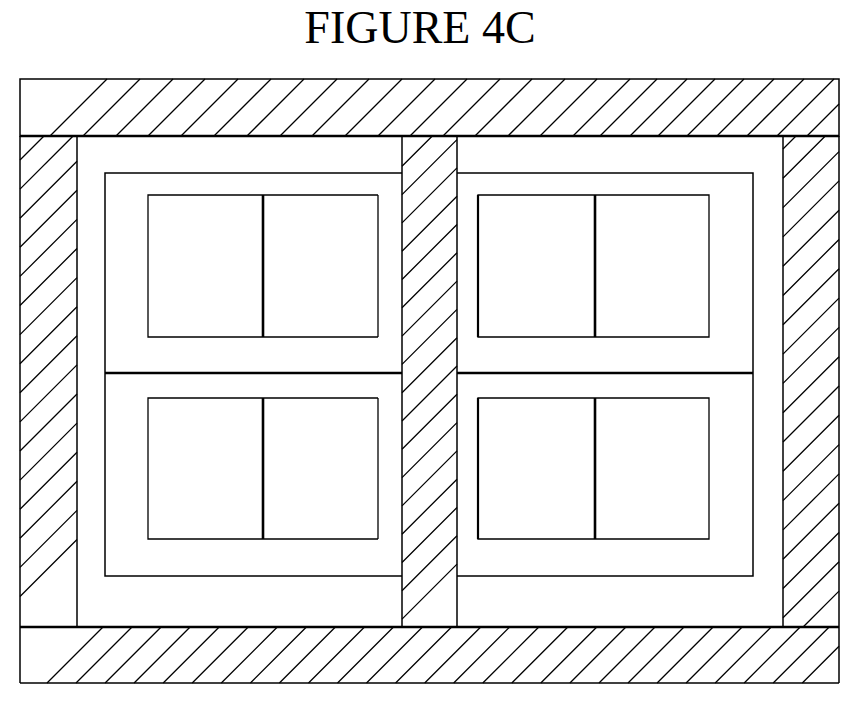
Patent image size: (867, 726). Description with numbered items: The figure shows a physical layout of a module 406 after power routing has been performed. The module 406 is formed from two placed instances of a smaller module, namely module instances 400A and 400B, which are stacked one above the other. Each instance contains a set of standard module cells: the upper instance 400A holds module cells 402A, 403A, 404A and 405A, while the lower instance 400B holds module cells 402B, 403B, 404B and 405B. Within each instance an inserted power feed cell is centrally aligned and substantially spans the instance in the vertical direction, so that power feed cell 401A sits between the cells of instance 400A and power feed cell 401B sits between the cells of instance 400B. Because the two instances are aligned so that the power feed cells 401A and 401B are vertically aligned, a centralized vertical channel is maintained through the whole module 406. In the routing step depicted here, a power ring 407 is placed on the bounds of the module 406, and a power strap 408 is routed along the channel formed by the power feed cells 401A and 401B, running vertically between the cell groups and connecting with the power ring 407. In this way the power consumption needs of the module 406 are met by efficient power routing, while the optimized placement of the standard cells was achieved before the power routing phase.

The module instance 400A is at (157, 361).
The module instance 400B is at (157, 564).
The power feed cell 401A is at (395, 323).
The power feed cell 401B is at (395, 527).
The module cell 402A is at (205, 266).
The module cell 402B is at (205, 468).
The module cell 403A is at (320, 266).
The module cell 403B is at (320, 468).
The module cell 404A is at (536, 266).
The module cell 404B is at (536, 468).
The module cell 405A is at (652, 266).
The module cell 405B is at (652, 468).
The module 406 is at (90, 616).
The power ring 407 is at (697, 118).
The power strap 408 is at (413, 600).